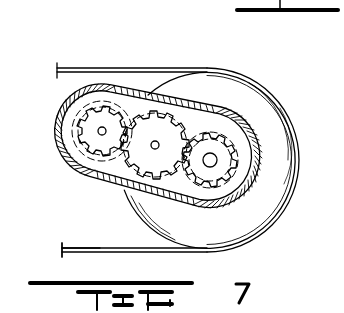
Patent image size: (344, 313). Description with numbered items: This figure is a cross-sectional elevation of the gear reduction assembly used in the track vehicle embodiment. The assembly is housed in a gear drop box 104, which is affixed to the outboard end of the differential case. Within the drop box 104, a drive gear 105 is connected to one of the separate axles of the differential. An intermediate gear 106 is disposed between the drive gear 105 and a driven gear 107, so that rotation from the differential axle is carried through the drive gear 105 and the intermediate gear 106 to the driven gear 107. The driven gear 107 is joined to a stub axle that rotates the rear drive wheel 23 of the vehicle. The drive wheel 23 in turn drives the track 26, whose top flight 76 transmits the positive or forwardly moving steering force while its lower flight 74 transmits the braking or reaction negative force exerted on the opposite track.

The rear drive wheel 23 is at (272, 117).
The top flight 76 is at (85, 68).
The lower flight 74 is at (133, 253).
The track 26 is at (78, 229).
The gear drop box 104 is at (63, 150).
The drive gear 105 is at (103, 155).
The intermediate gear 106 is at (138, 115).
The driven gear 107 is at (207, 134).